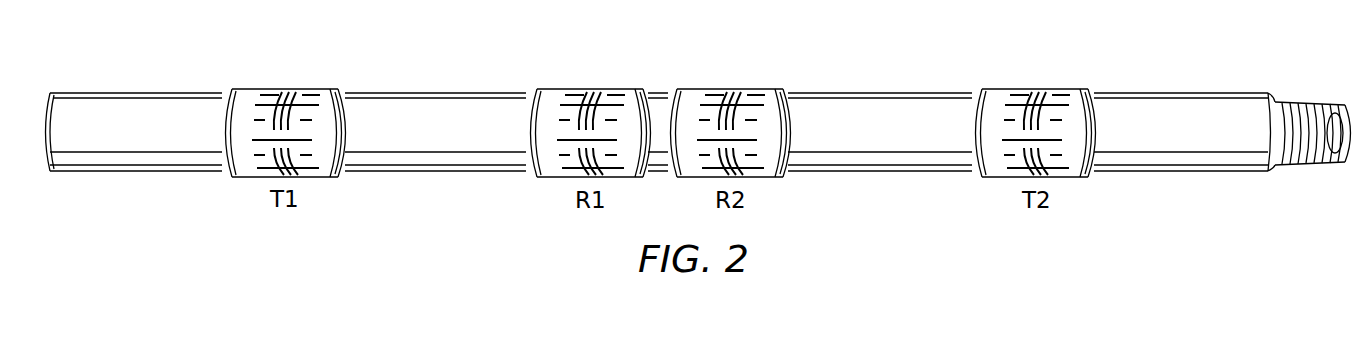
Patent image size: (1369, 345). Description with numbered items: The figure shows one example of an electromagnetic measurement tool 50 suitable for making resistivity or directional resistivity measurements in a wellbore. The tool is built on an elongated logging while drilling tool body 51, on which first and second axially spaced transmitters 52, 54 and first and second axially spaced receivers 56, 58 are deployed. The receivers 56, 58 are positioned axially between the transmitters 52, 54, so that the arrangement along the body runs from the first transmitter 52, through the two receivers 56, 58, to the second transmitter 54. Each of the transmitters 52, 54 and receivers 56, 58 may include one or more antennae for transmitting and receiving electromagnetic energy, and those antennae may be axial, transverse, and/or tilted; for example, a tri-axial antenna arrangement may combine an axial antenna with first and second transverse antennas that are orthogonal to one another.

The electromagnetic measurement tool 50 is at (698, 95).
The logging while drilling tool body 51 is at (137, 93).
The first transmitter 52 is at (270, 89).
The second transmitter 54 is at (1068, 89).
The first receiver 56 is at (572, 89).
The second receiver 58 is at (752, 89).